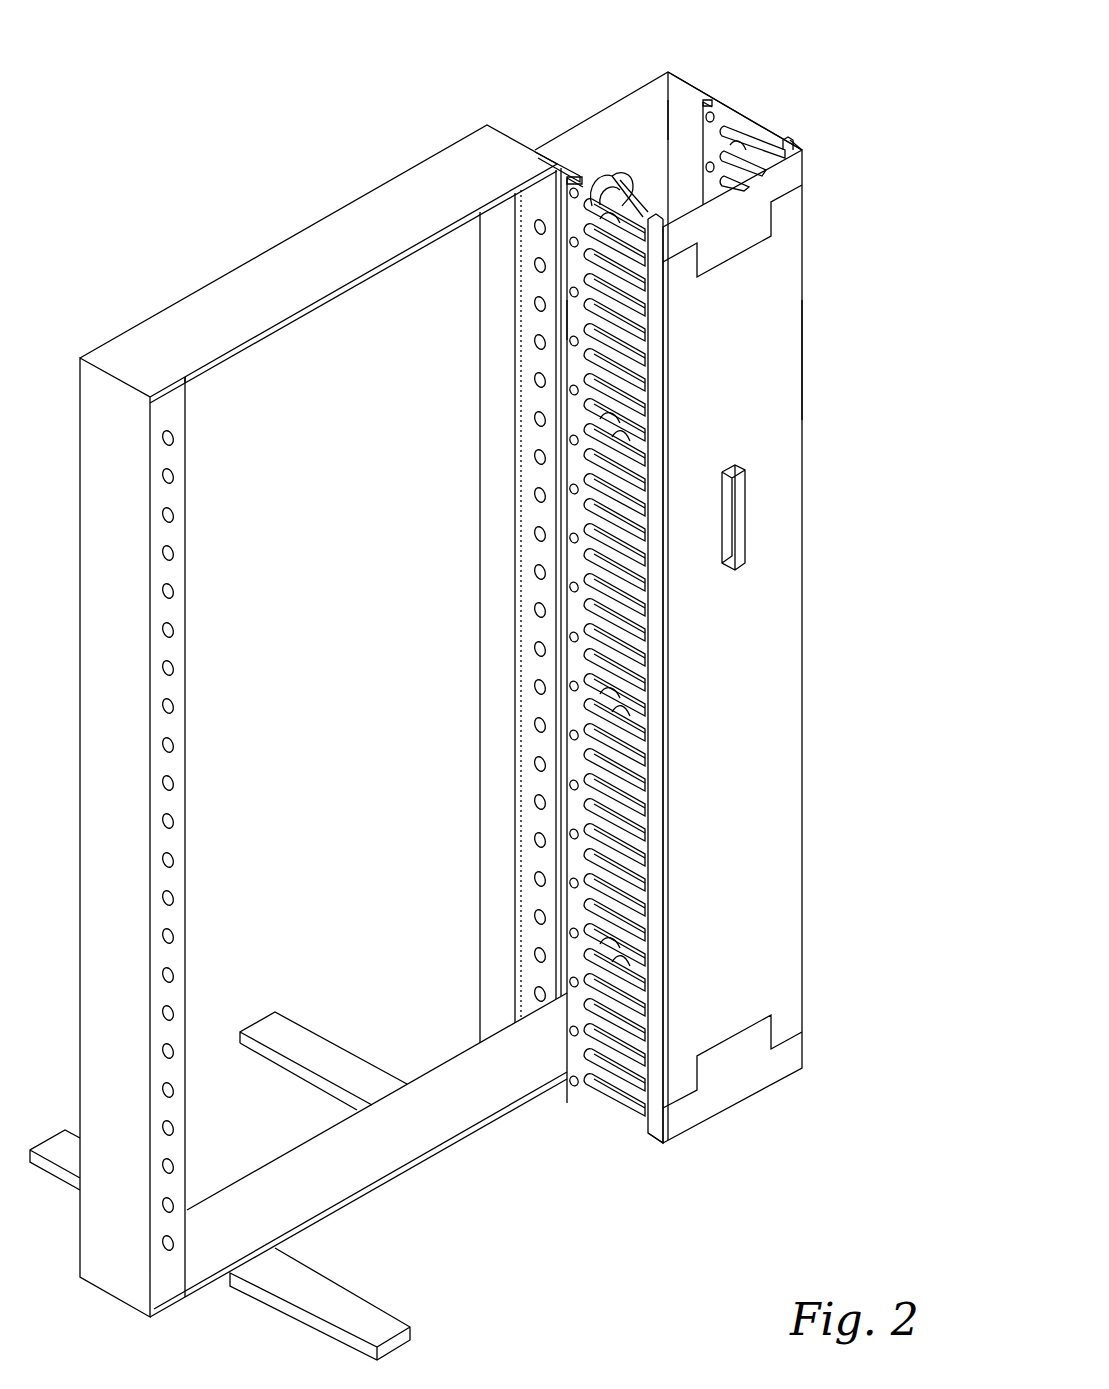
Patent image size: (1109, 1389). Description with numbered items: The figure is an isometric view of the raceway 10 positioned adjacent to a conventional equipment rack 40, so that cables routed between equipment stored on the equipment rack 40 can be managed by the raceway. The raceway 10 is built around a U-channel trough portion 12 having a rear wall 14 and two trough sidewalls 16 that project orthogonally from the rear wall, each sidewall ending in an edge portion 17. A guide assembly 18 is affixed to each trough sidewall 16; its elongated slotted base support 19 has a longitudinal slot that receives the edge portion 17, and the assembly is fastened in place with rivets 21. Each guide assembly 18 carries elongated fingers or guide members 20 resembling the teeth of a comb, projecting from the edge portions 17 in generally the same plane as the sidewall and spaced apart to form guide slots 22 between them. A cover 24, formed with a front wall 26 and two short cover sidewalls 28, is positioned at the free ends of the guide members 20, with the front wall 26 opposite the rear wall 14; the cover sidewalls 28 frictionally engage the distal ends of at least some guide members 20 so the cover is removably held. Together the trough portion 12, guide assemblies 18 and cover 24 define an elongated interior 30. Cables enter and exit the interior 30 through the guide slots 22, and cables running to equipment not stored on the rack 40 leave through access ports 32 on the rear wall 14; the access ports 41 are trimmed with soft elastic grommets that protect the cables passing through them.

The raceway 10 is at (835, 49).
The trough portion 12 is at (631, 93).
The rear wall 14 is at (579, 178).
The trough sidewalls 16 is at (553, 155).
The edge portion 17 is at (568, 176).
The guide assembly 18 is at (572, 267).
The slotted base support 19 is at (572, 318).
The guide members 20 is at (600, 505).
The rivets 21 is at (570, 490).
The guide slots 22 is at (605, 392).
The cover 24 is at (778, 428).
The front wall 26 is at (778, 346).
The cover sidewalls 28 is at (790, 140).
The interior 30 is at (692, 100).
The access ports 32 is at (620, 183).
The equipment rack 40 is at (240, 295).
The access ports 41 is at (625, 193).